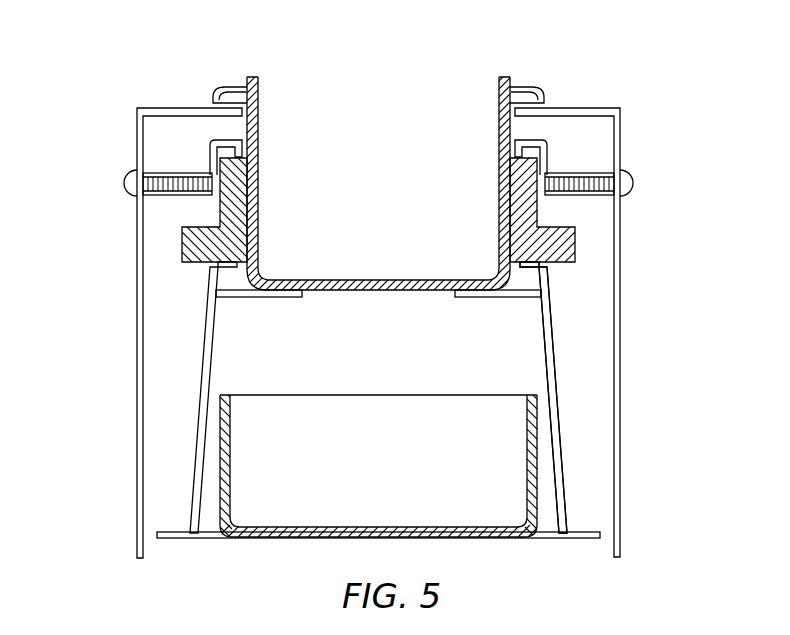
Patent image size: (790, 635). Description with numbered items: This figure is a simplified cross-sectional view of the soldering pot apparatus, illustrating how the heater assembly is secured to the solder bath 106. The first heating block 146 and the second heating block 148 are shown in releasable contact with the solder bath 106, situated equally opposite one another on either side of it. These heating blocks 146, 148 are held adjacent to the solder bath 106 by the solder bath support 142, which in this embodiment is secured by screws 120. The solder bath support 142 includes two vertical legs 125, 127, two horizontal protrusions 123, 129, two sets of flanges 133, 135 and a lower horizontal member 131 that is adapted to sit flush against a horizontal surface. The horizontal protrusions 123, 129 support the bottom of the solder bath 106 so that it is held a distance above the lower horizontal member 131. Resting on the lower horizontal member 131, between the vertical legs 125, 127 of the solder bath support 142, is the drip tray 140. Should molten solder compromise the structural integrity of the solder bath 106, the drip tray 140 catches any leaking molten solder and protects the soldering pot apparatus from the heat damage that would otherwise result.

The solder bath 106 is at (442, 98).
The screws 120 is at (623, 173).
The horizontal protrusion 123 is at (257, 297).
The vertical leg 125 is at (197, 475).
The vertical leg 127 is at (558, 433).
The horizontal protrusion 129 is at (497, 297).
The lower horizontal member 131 is at (577, 540).
The set of flanges 133 is at (110, 145).
The set of flanges 135 is at (648, 145).
The drip tray 140 is at (492, 470).
The solder bath support 142 is at (550, 371).
The first heating block 146 is at (182, 248).
The second heating block 148 is at (575, 245).